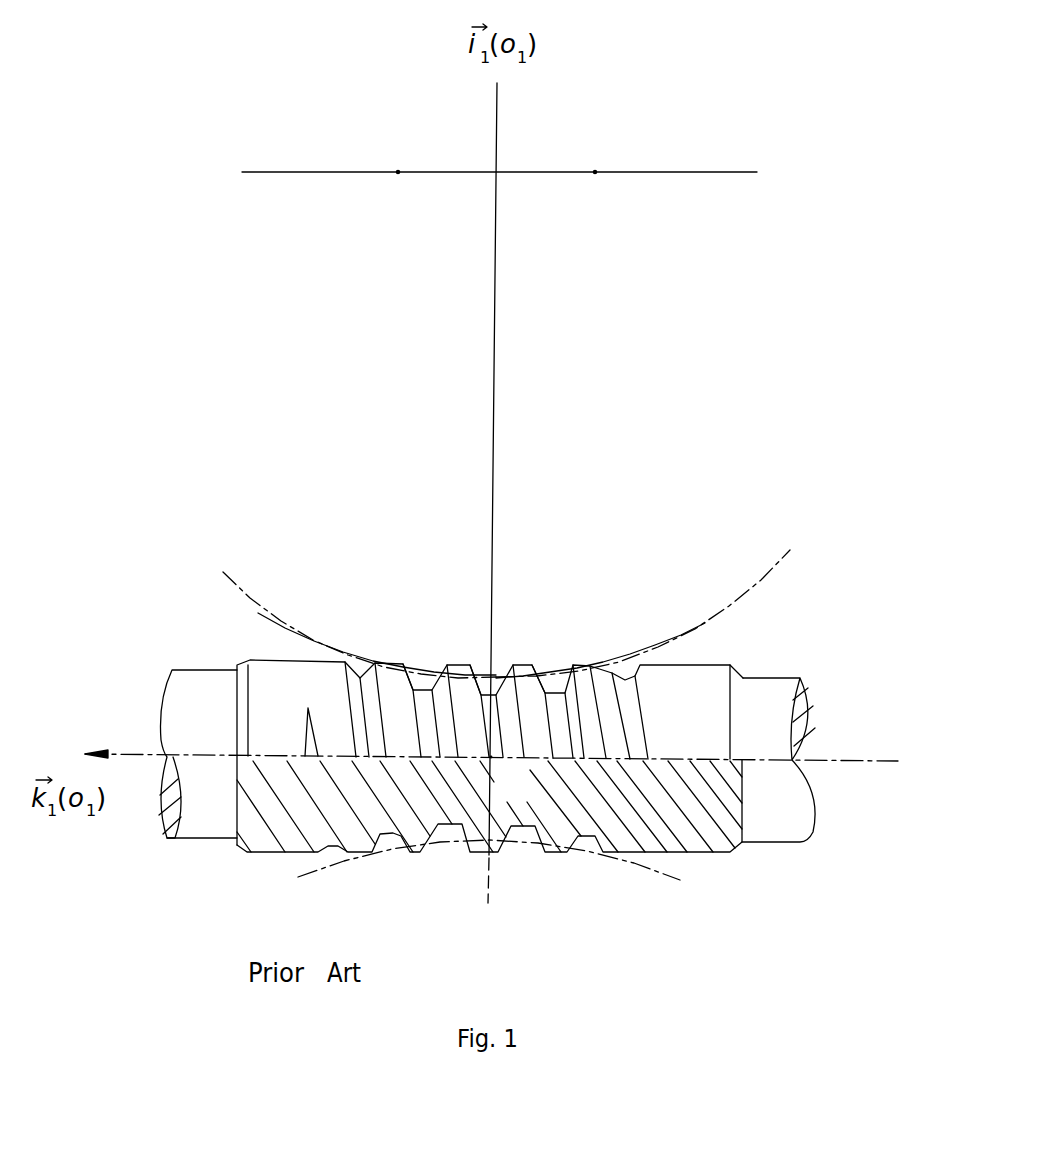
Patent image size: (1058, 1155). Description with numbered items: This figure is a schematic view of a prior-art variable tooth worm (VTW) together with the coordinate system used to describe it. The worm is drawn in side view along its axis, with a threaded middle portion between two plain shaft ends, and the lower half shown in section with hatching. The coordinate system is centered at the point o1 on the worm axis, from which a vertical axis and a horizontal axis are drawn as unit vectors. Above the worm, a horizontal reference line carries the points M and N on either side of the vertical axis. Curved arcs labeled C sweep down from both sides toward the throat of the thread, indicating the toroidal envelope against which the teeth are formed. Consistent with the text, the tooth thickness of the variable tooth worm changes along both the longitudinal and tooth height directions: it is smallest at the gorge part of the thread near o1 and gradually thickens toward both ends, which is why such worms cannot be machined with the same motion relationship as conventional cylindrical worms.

The gear pitch circle (throat circle) C is at (506, 715).
The reference point M is at (397, 192).
The reference point N is at (594, 190).
The worm axis origin o1 is at (507, 778).